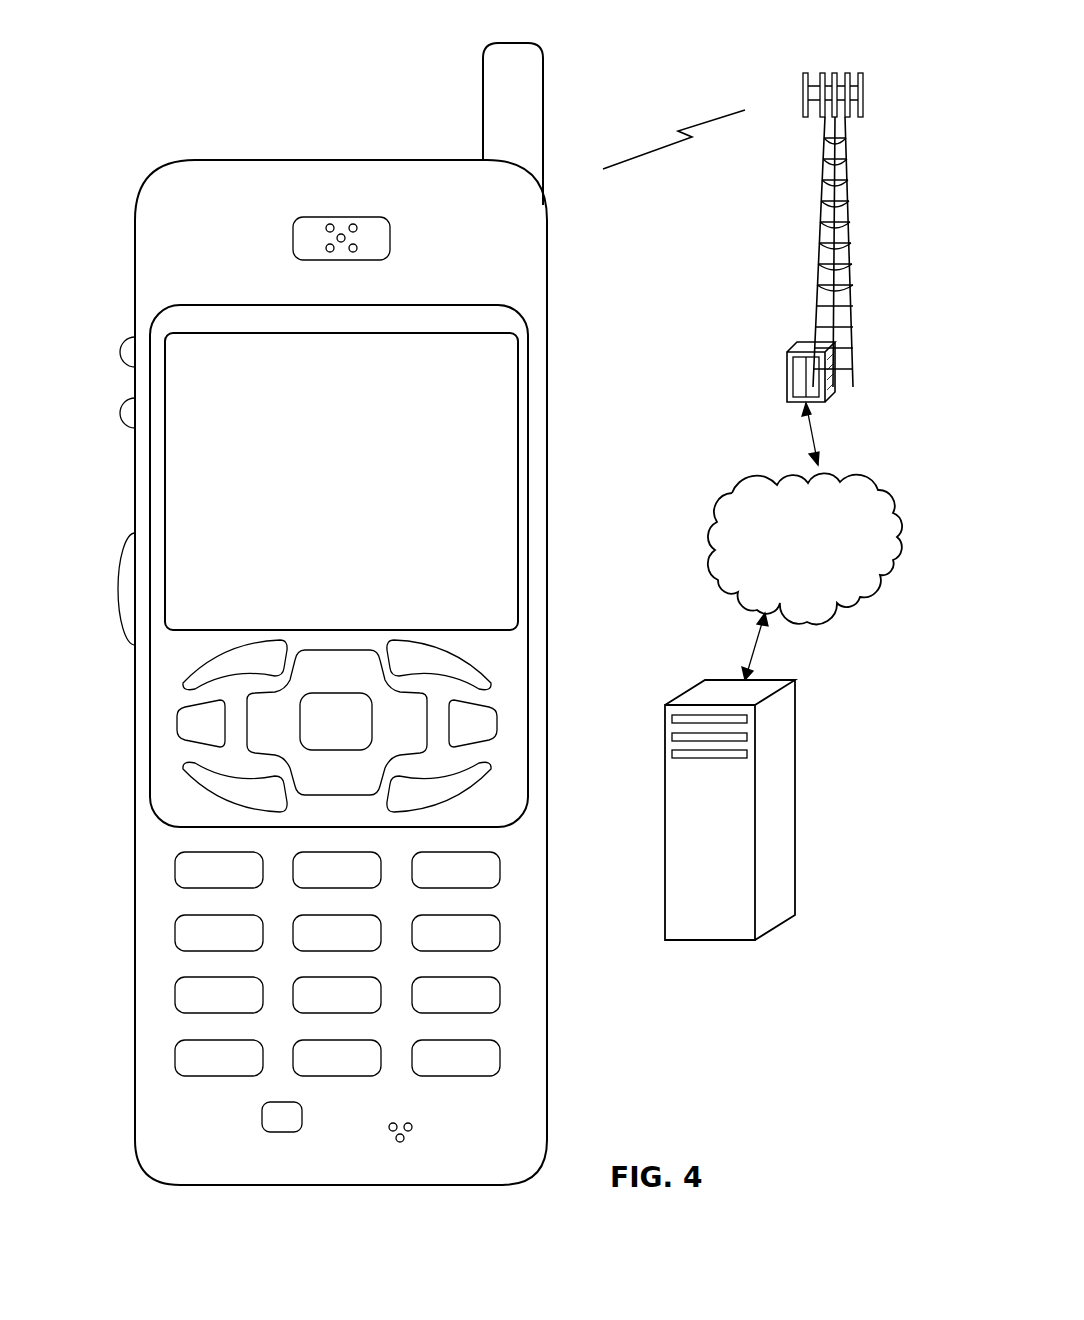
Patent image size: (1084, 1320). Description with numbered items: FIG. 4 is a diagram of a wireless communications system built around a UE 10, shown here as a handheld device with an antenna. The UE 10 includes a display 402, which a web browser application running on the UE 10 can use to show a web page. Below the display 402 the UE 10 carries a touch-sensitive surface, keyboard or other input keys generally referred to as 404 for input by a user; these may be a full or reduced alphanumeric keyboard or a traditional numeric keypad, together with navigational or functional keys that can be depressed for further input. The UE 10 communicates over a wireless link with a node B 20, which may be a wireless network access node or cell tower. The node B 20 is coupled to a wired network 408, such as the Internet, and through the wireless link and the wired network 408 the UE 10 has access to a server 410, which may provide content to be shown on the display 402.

The UE 10 is at (182, 1180).
The node B 20 is at (817, 252).
The display 402 is at (518, 347).
The input keys 404 is at (557, 640).
The wired network 408 is at (725, 588).
The server 410 is at (705, 940).